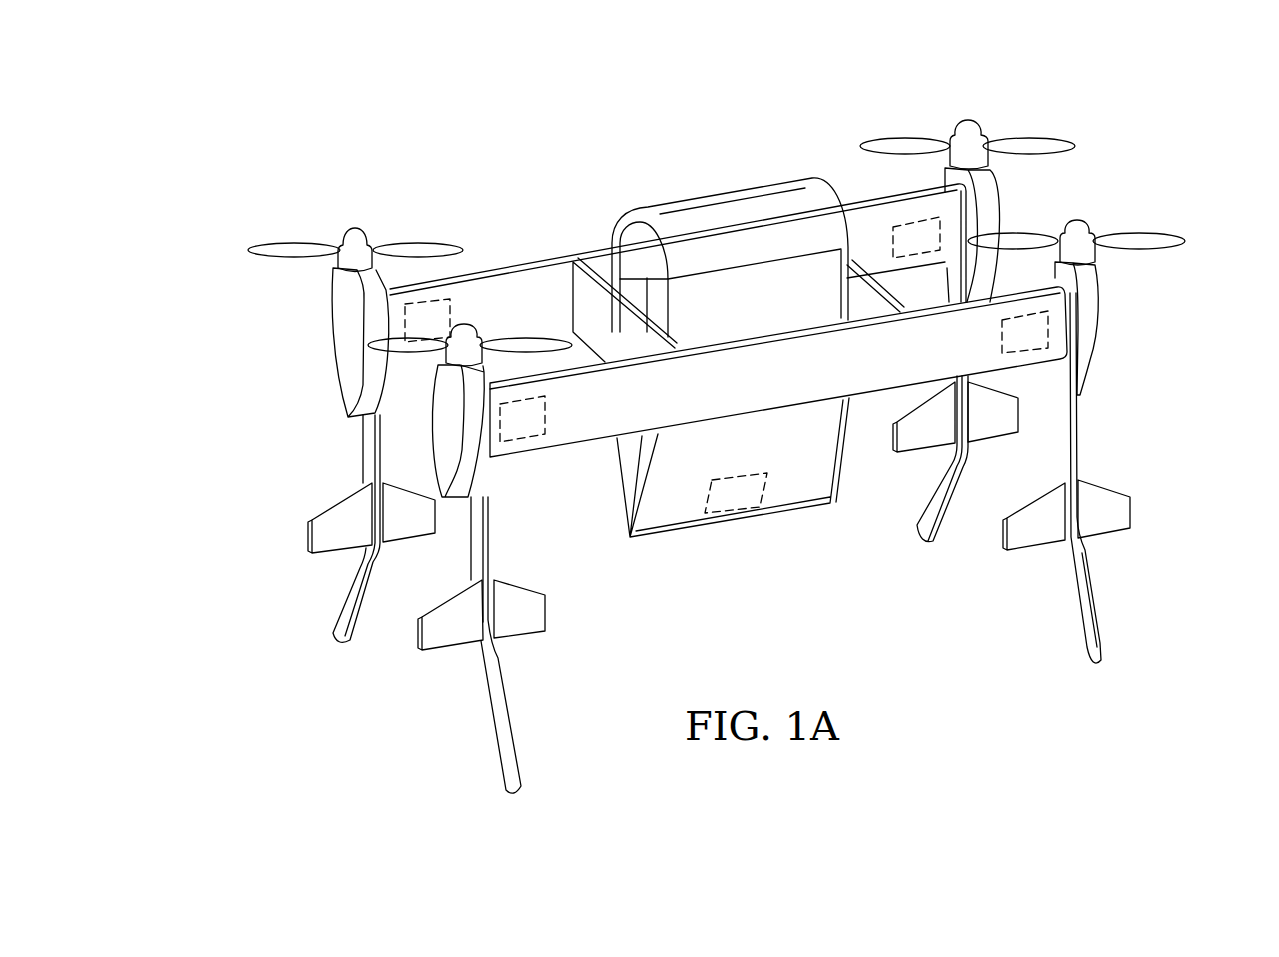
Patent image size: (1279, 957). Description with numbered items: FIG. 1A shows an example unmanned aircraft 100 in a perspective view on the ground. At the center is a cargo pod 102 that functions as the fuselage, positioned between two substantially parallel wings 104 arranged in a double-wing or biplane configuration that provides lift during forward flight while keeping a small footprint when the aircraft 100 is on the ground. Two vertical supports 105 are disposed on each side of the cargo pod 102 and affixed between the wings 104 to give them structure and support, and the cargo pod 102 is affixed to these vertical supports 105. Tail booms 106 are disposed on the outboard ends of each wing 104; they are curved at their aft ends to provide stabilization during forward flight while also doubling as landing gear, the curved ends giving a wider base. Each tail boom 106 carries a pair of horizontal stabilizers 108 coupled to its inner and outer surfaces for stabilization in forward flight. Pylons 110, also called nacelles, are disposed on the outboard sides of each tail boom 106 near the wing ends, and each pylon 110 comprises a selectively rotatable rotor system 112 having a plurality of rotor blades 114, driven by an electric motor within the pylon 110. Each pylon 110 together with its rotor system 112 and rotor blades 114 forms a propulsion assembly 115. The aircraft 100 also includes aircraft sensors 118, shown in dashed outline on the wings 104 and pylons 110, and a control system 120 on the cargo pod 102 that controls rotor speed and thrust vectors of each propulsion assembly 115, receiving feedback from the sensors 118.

The aircraft 100 is at (581, 116).
The cargo pod 102 is at (708, 196).
The wings 104 is at (583, 249).
The vertical supports 105 is at (645, 342).
The tail booms 106 is at (337, 622).
The horizontal stabilizers 108 is at (325, 541).
The pylons 110 is at (339, 338).
The rotor system 112 is at (356, 226).
The rotor blades 114 is at (266, 243).
The propulsion assembly 115 is at (303, 188).
The aircraft sensors 118 is at (403, 316).
The control system 120 is at (723, 518).